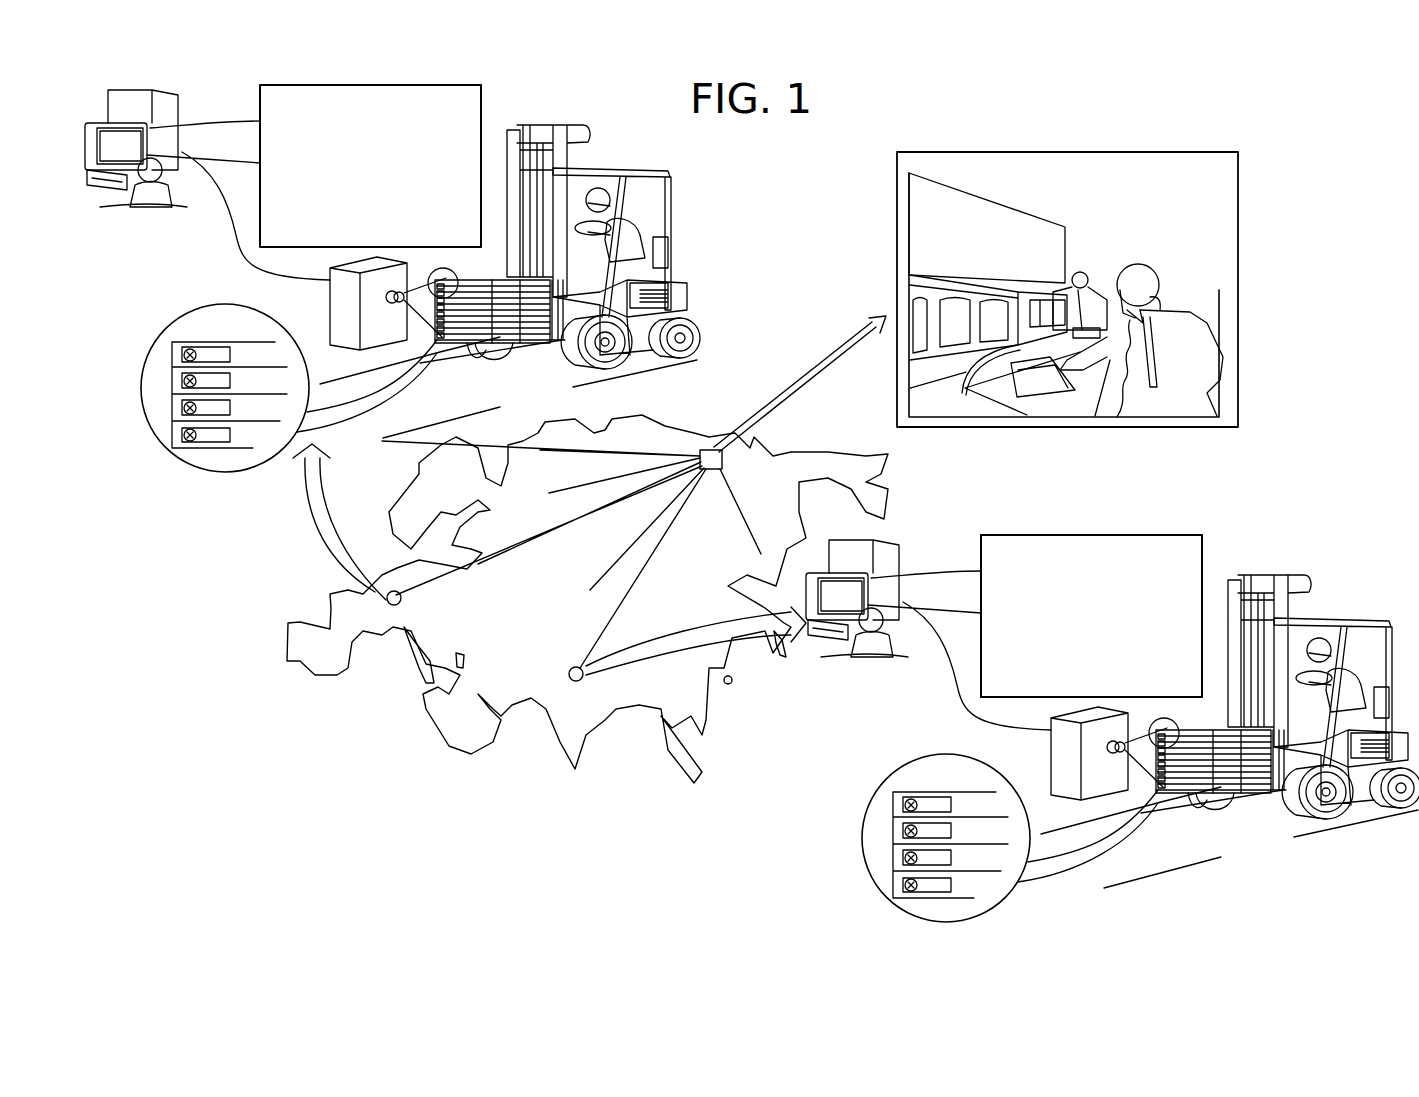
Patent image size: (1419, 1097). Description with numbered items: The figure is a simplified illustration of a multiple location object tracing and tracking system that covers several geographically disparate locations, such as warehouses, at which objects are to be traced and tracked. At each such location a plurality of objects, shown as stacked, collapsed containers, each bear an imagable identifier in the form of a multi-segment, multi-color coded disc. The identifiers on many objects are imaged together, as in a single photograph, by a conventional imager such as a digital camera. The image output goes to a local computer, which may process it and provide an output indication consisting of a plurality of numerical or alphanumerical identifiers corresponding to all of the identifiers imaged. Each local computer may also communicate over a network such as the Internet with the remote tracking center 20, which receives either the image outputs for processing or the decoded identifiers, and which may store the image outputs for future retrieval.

The remote tracking center 20 is at (1242, 266).